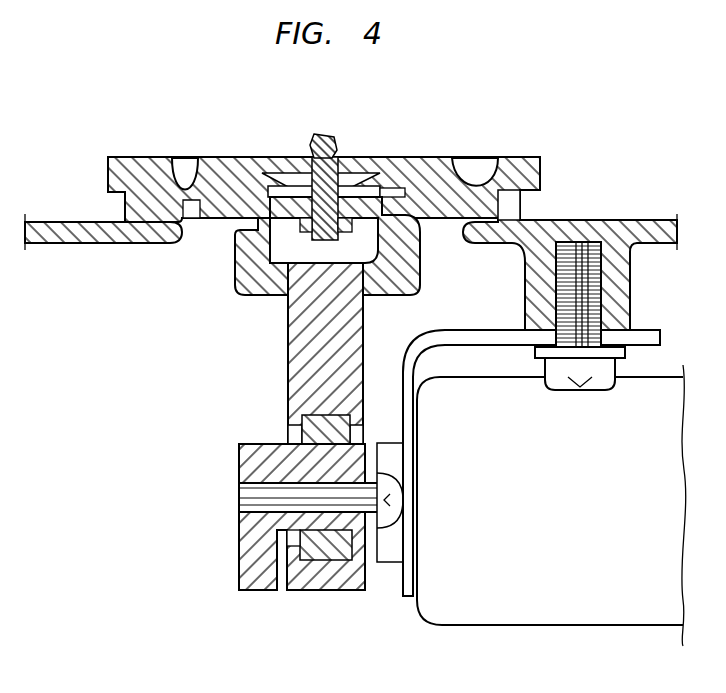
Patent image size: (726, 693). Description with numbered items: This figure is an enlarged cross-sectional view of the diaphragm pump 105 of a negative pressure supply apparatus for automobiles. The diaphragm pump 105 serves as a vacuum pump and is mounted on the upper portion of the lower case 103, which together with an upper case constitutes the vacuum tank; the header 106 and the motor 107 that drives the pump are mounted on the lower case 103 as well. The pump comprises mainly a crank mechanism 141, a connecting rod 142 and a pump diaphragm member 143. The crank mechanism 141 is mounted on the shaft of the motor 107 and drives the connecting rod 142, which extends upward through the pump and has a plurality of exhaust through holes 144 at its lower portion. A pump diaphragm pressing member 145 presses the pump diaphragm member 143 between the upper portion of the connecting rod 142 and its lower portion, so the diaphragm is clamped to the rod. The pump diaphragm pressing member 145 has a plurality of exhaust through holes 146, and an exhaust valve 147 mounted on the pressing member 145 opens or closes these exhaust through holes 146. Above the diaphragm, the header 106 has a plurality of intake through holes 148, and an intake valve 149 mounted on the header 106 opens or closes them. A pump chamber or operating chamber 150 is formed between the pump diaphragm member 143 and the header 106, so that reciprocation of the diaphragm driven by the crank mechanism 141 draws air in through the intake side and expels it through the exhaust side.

The lower case 103 is at (95, 243).
The diaphragm pump 105 is at (284, 336).
The header 106 is at (200, 158).
The motor 107 is at (584, 612).
The crank mechanism 141 is at (247, 548).
The connecting rod 142 is at (302, 387).
The pump diaphragm member 143 is at (192, 225).
The exhaust through holes 144 is at (265, 322).
The pump diaphragm pressing member 145 is at (399, 186).
The exhaust through holes 146 is at (297, 193).
The exhaust valve 147 is at (343, 230).
The intake through holes 148 is at (296, 160).
The intake valve 149 is at (349, 172).
The pump chamber 150 is at (423, 200).